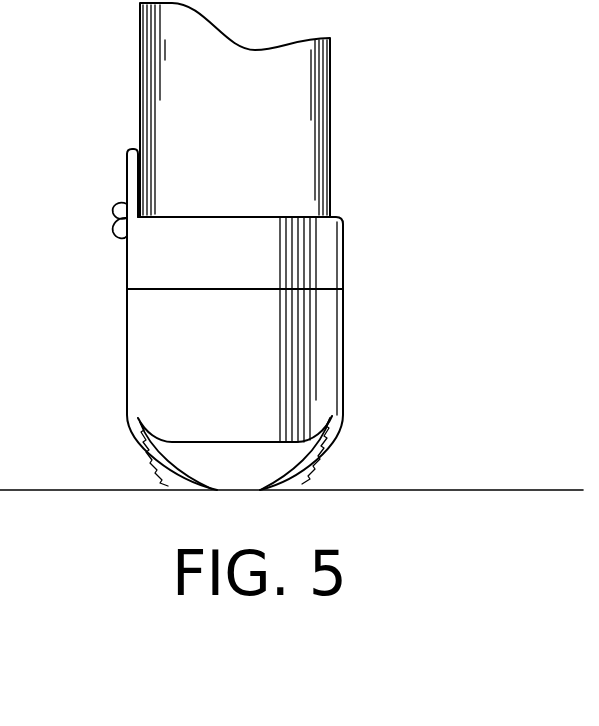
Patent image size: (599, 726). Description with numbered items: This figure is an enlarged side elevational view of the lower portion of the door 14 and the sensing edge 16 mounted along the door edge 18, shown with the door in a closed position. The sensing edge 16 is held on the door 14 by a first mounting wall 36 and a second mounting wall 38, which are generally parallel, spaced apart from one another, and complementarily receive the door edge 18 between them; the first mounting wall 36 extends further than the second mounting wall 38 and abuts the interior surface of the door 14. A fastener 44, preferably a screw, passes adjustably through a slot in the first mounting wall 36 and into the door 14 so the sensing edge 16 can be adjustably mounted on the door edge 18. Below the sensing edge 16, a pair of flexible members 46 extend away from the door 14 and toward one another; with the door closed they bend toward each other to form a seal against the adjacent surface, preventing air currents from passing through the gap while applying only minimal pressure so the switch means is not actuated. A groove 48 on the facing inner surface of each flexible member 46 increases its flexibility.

The door 14 is at (147, 38).
The sensing edge 16 is at (173, 490).
The door edge 18 is at (223, 492).
The first mounting wall 36 is at (127, 158).
The second mounting wall 38 is at (344, 232).
The fastener 44 is at (112, 226).
The flexible members 46 is at (158, 472).
The groove 48 is at (166, 441).